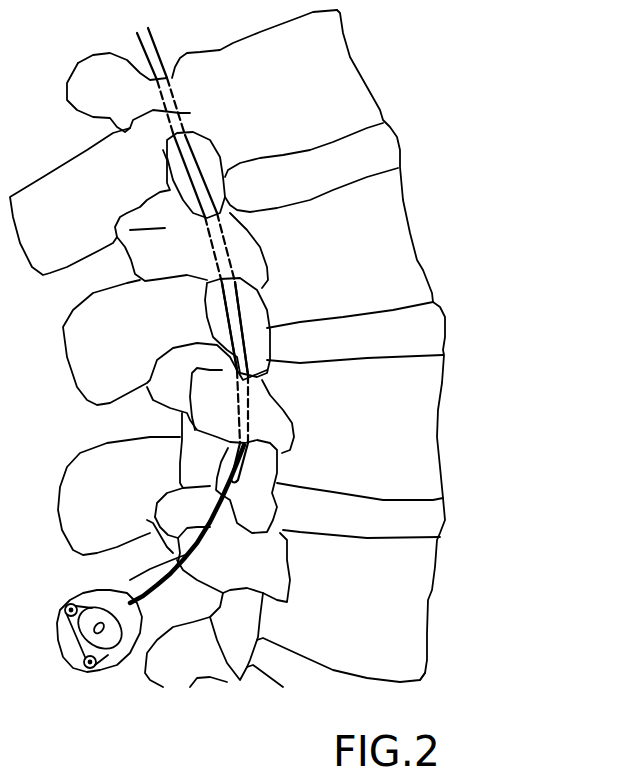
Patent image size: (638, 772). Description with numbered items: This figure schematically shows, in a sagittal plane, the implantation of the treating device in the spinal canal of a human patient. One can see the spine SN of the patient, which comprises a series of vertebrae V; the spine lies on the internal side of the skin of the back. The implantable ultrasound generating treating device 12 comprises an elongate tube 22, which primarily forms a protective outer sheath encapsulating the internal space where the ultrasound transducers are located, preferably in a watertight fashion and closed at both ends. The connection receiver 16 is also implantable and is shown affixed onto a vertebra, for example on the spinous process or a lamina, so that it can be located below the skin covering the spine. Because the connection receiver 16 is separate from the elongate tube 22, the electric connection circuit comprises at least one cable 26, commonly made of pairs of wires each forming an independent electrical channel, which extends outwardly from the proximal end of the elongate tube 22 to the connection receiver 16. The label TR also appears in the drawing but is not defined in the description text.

The implantable ultrasound generating treating device 12 is at (208, 156).
The elongate tube 22 is at (235, 308).
The cable 26 is at (185, 551).
The connection receiver 16 is at (127, 640).
The vertebrae V is at (402, 227).
The spine SN is at (483, 123).
The torso region TR is at (170, 767).